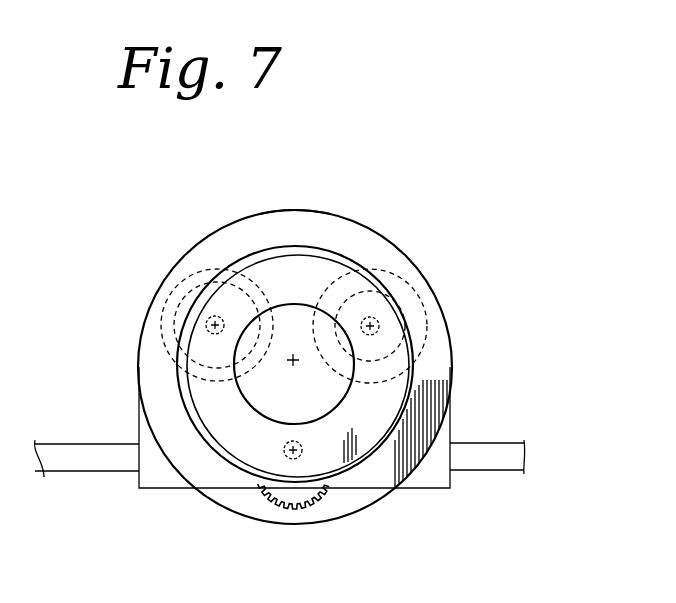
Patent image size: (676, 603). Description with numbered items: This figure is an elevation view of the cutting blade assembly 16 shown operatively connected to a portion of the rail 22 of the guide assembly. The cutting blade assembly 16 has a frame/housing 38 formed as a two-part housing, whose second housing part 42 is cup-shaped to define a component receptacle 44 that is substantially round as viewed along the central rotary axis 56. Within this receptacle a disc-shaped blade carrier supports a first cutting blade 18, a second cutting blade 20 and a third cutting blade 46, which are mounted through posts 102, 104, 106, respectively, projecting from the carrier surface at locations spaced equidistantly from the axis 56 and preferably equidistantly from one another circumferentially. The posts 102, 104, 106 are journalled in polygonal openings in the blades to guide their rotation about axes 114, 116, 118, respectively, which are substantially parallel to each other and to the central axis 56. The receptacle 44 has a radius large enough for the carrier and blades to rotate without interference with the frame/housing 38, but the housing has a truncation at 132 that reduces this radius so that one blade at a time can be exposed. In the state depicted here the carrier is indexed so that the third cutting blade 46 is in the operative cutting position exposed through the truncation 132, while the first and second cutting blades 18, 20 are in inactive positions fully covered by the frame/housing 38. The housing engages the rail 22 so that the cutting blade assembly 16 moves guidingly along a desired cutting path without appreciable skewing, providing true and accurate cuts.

The cutting blade assembly 16 is at (423, 208).
The first cutting blade 18 is at (403, 277).
The second cutting blade 20 is at (187, 275).
The rail 22 is at (473, 450).
The frame/housing 38 is at (435, 294).
The second housing part 42 is at (430, 384).
The component receptacle 44 is at (317, 232).
The third cutting blade 46 is at (303, 497).
The central rotary axis 56 is at (293, 360).
The post 102 is at (424, 312).
The post 104 is at (214, 316).
The post 106 is at (286, 457).
The axis 114 is at (395, 300).
The axis 116 is at (175, 307).
The axis 118 is at (302, 446).
The truncation 132 is at (183, 490).